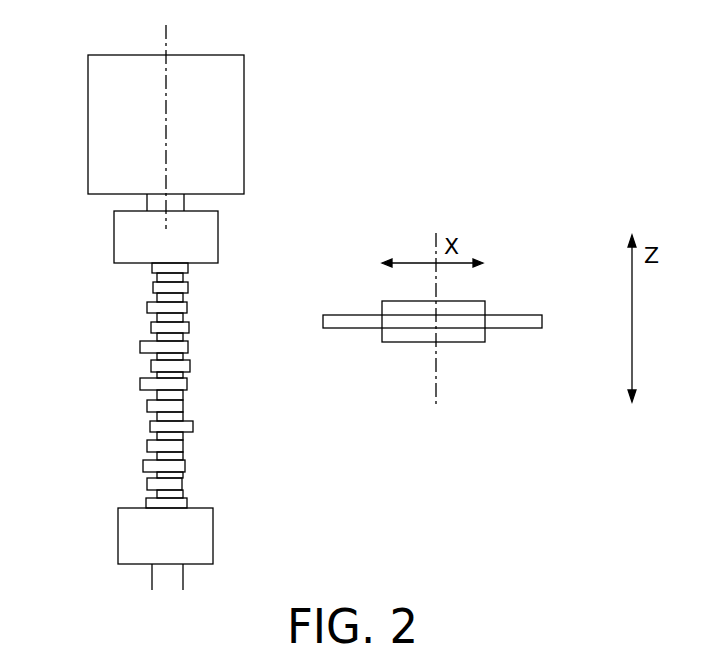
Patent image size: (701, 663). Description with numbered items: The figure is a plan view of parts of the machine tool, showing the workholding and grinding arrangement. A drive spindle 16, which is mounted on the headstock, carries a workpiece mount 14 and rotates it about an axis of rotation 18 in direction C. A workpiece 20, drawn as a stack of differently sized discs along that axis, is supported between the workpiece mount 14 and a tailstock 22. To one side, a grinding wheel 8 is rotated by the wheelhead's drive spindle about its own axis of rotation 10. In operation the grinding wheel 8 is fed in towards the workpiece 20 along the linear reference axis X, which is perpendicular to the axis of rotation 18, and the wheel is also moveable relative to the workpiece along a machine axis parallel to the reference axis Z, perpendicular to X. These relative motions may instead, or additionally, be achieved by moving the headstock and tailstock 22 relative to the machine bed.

The grinding wheel 8 is at (527, 322).
The axis of rotation 10 is at (436, 402).
The workpiece mount 14 is at (208, 247).
The drive spindle 16 is at (88, 112).
The axis of rotation 18 is at (166, 45).
The workpiece 20 is at (186, 385).
The tailstock 22 is at (203, 535).